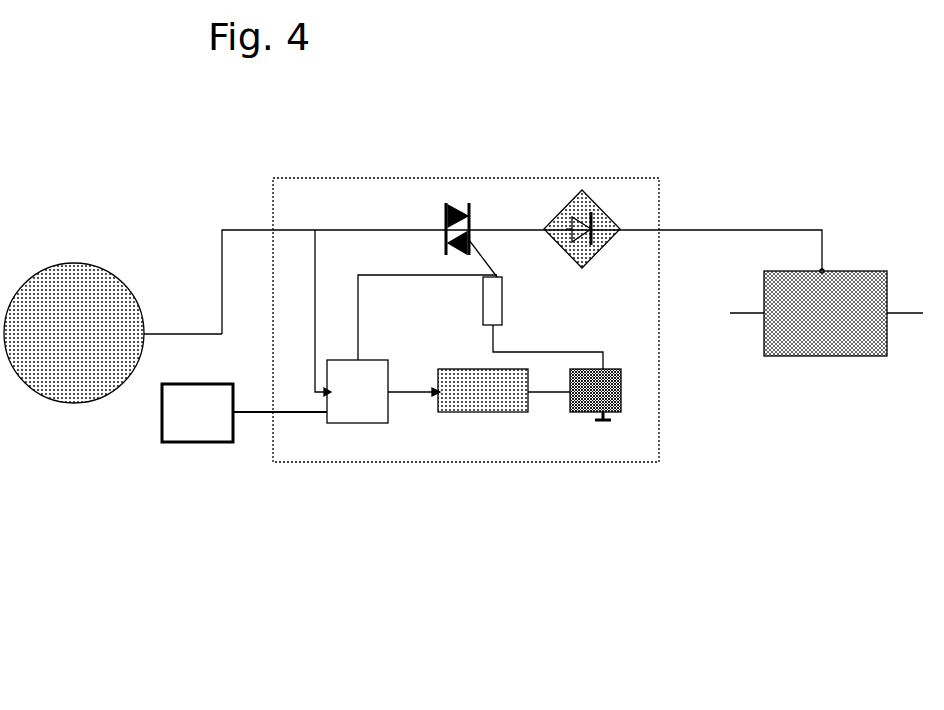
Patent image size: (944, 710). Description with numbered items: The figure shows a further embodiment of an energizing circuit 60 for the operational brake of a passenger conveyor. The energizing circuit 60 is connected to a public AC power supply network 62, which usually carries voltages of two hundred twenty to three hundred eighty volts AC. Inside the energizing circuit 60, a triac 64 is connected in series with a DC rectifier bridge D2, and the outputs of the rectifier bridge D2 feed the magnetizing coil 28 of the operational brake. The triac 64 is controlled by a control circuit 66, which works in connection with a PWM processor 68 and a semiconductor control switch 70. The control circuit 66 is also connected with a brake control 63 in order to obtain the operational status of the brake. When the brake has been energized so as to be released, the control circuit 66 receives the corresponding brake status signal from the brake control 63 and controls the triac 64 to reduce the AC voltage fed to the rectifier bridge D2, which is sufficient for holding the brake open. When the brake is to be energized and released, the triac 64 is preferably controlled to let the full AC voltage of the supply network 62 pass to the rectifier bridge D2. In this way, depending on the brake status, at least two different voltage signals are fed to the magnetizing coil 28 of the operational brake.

The energizing circuit 60 is at (224, 170).
The AC power supply network 62 is at (86, 370).
The brake control 63 is at (214, 413).
The triac 64 is at (456, 212).
The control circuit 66 is at (367, 412).
The PWM processor 68 is at (478, 403).
The semiconductor control switch 70 is at (588, 402).
The DC rectifier bridge D2 is at (560, 218).
The magnetizing coil 28 is at (813, 324).